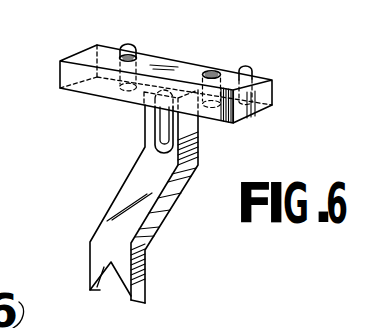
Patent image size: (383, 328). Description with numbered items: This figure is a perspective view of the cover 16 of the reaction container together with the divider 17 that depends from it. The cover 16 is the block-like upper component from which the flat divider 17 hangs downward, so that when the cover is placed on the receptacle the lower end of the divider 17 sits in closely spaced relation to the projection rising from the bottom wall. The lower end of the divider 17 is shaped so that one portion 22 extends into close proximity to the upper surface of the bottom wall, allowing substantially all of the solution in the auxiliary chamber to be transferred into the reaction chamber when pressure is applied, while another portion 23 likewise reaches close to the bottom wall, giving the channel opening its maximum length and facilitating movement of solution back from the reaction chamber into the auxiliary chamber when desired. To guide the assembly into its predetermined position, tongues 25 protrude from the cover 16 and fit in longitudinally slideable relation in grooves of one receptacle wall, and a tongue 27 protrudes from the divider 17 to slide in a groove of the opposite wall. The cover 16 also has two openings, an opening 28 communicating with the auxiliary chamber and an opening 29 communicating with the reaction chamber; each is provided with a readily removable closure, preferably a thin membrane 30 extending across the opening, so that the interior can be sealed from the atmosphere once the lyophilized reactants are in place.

The cover 16 is at (57, 78).
The divider 17 is at (127, 200).
The portion of the lower end of the divider 22 is at (100, 275).
The portion of the lower end of the divider 23 is at (147, 283).
The tongues 25 is at (137, 33).
The tongue 27 is at (156, 127).
The opening 28 is at (104, 96).
The opening 29 is at (216, 118).
The membrane 30 is at (134, 54).